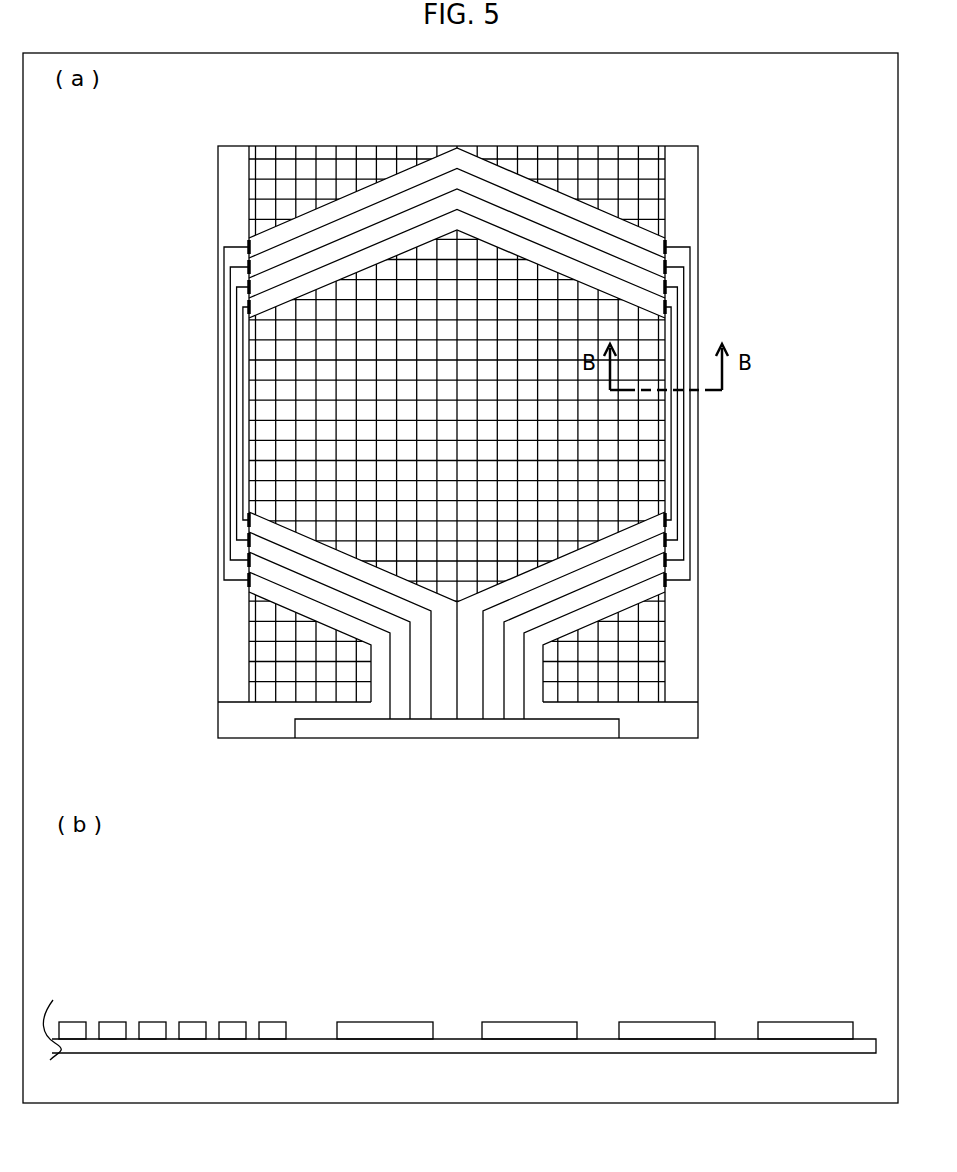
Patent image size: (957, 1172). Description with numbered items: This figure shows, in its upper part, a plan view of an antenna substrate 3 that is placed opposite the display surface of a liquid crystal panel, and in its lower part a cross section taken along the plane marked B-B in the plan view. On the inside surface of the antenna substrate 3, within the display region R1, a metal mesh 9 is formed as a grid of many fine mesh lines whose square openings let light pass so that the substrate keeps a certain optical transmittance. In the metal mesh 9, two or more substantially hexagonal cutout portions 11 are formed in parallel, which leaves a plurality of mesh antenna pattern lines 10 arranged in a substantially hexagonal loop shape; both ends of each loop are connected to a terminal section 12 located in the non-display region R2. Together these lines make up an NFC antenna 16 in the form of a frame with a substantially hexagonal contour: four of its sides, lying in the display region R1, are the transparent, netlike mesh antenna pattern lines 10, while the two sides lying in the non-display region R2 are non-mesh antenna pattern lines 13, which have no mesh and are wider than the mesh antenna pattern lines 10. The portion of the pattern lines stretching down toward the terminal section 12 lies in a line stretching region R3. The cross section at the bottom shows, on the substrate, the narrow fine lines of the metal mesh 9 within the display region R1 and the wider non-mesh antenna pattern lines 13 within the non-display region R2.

The antenna substrate 3 is at (307, 147).
The metal mesh 9 is at (590, 467).
The mesh antenna pattern lines 10 is at (595, 227).
The cutout portions 11 is at (505, 202).
The terminal section 12 is at (580, 729).
The non-mesh antenna pattern lines 13 is at (690, 248).
The NFC antenna 16 is at (312, 625).
The display region R1 is at (280, 177).
The non-display region R2 is at (237, 210).
The line stretching region R3 is at (708, 645).